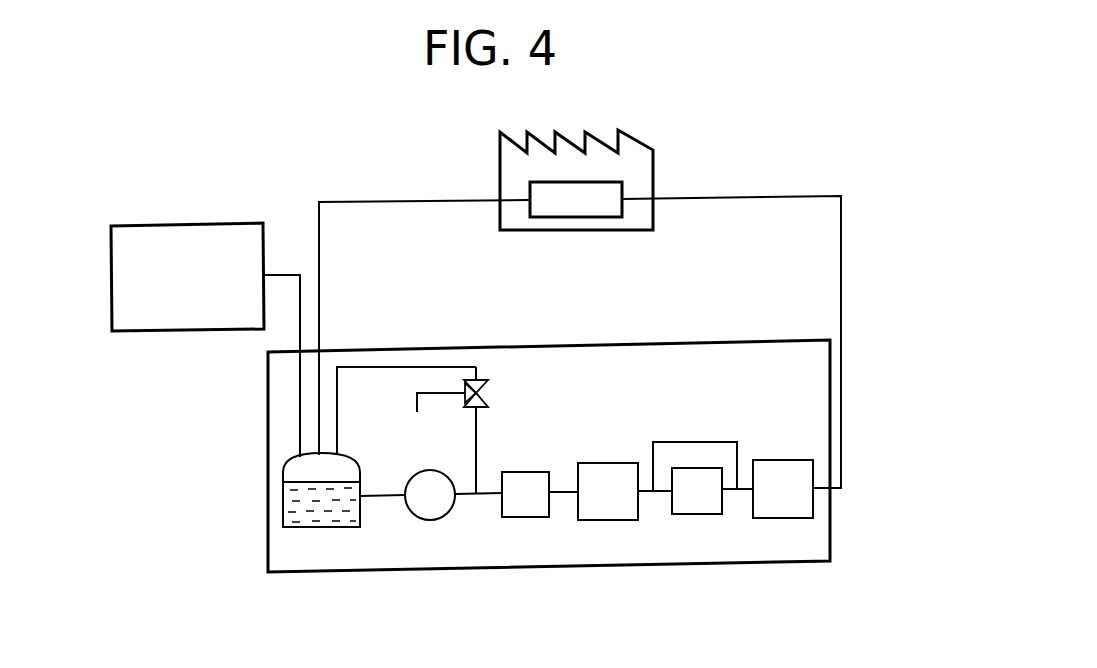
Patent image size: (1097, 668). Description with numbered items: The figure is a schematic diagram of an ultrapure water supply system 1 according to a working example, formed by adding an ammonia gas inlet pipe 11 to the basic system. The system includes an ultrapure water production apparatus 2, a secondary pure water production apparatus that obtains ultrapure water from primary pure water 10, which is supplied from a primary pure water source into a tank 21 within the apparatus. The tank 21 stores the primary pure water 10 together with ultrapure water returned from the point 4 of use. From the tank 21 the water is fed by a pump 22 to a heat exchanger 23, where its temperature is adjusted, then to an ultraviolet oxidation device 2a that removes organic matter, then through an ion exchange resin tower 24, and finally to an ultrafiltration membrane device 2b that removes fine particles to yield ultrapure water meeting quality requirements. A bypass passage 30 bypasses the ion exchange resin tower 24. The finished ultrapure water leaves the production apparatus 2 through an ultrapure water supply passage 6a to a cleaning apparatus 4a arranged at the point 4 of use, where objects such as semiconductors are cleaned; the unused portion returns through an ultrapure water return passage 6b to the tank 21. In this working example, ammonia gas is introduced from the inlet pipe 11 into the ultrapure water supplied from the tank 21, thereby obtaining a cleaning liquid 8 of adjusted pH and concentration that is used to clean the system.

The ultrapure water supply system 1 is at (810, 179).
The ultrapure water production apparatus 2 is at (832, 530).
The ultraviolet oxidation device 2a is at (606, 520).
The ultrafiltration membrane device 2b is at (784, 518).
The point of use 4 is at (640, 145).
The cleaning apparatus 4a is at (623, 190).
The ultrapure water supply passage 6a is at (842, 250).
The ultrapure water return passage 6b is at (367, 201).
The cleaning liquid 8 is at (285, 505).
The primary pure water 10 is at (148, 225).
The ammonia gas inlet pipe 11 is at (478, 420).
The tank 21 is at (323, 527).
The pump 22 is at (430, 520).
The heat exchanger 23 is at (523, 517).
The ion exchange resin tower 24 is at (697, 514).
The bypass passage 30 is at (718, 442).